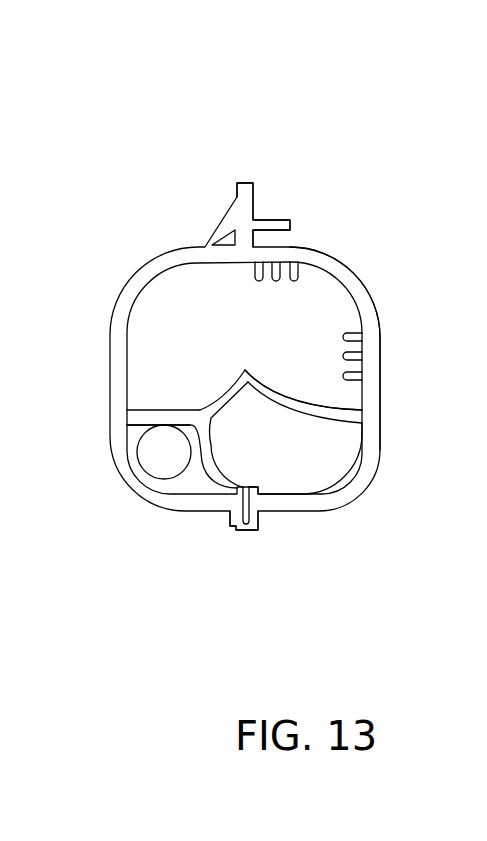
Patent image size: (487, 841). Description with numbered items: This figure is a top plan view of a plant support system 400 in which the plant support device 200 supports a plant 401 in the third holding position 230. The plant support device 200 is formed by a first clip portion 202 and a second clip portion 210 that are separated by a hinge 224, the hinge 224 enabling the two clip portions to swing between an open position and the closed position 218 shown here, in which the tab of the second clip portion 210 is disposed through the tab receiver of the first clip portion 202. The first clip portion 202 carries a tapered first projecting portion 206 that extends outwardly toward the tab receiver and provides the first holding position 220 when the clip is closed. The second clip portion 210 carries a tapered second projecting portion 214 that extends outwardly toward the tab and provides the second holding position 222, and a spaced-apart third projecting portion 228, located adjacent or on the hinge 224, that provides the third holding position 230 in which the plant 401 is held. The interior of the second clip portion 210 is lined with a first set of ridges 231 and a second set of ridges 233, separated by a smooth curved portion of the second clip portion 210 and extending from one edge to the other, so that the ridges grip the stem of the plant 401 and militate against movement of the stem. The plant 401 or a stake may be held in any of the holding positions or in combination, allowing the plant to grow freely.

The plant support system 400 is at (93, 49).
The plant support device 200 is at (186, 216).
The closed position 218 is at (245, 153).
The first holding position 220 is at (184, 317).
The first clip portion 202 is at (125, 297).
The first projecting portion 206 is at (207, 404).
The first set of ridges 231 is at (300, 270).
The second clip portion 210 is at (364, 298).
The second set of ridges 233 is at (351, 338).
The second projecting portion 214 is at (279, 403).
The plant 401 is at (158, 452).
The third holding position 230 is at (189, 488).
The third projecting portion 228 is at (206, 415).
The hinge 224 is at (253, 526).
The second holding position 222 is at (296, 458).